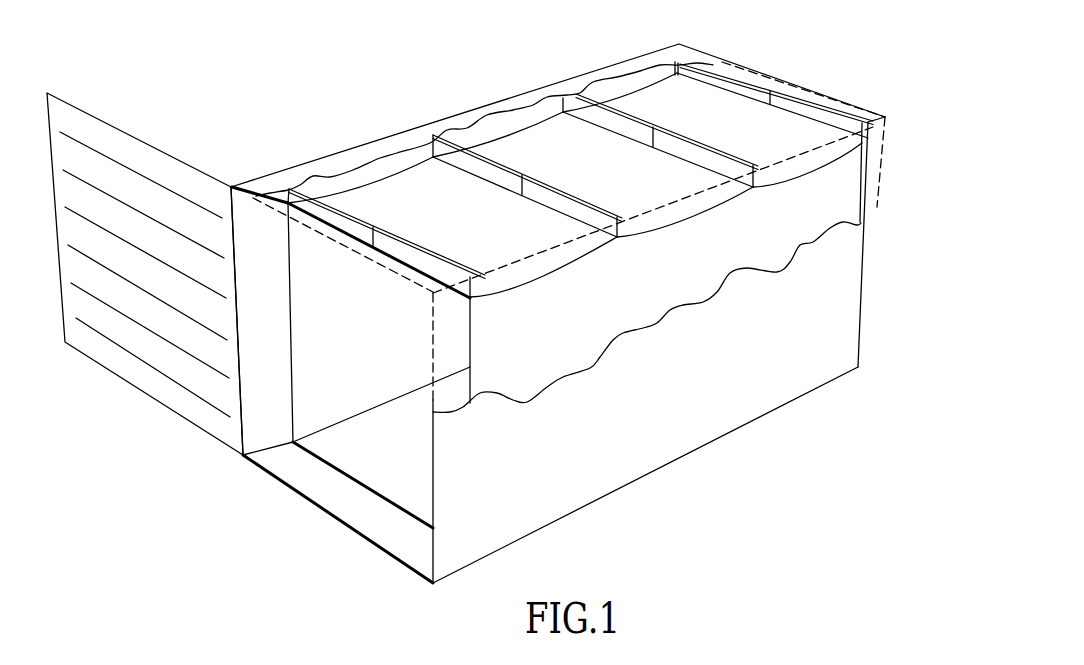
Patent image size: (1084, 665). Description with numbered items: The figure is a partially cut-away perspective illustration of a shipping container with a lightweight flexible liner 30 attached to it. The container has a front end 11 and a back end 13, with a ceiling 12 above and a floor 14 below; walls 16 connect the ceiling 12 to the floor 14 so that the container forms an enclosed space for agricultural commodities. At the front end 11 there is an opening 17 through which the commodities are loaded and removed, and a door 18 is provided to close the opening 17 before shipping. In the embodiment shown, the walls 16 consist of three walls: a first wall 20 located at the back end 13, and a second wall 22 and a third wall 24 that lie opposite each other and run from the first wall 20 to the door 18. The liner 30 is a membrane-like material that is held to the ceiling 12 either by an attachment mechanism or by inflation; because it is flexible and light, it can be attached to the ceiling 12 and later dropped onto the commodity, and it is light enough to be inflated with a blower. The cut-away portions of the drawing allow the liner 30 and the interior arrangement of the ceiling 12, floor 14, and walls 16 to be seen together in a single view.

The front end 11 is at (363, 548).
The ceiling 12 is at (477, 115).
The back end 13 is at (898, 308).
The floor 14 is at (288, 465).
The walls 16 is at (872, 183).
The opening 17 is at (322, 381).
The door 18 is at (128, 365).
The first wall 20 is at (790, 103).
The second wall 22 is at (728, 389).
The third wall 24 is at (370, 170).
The lightweight flexible liner 30 is at (535, 283).